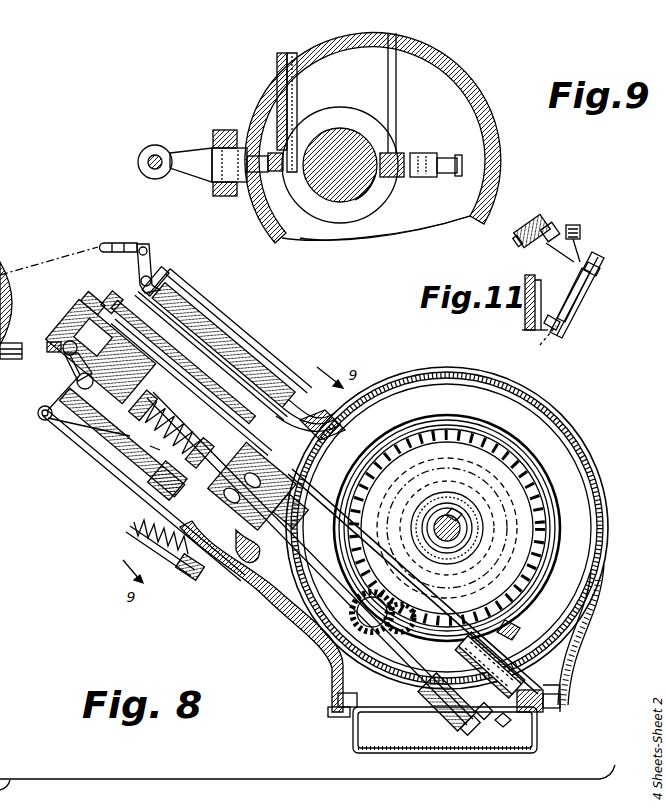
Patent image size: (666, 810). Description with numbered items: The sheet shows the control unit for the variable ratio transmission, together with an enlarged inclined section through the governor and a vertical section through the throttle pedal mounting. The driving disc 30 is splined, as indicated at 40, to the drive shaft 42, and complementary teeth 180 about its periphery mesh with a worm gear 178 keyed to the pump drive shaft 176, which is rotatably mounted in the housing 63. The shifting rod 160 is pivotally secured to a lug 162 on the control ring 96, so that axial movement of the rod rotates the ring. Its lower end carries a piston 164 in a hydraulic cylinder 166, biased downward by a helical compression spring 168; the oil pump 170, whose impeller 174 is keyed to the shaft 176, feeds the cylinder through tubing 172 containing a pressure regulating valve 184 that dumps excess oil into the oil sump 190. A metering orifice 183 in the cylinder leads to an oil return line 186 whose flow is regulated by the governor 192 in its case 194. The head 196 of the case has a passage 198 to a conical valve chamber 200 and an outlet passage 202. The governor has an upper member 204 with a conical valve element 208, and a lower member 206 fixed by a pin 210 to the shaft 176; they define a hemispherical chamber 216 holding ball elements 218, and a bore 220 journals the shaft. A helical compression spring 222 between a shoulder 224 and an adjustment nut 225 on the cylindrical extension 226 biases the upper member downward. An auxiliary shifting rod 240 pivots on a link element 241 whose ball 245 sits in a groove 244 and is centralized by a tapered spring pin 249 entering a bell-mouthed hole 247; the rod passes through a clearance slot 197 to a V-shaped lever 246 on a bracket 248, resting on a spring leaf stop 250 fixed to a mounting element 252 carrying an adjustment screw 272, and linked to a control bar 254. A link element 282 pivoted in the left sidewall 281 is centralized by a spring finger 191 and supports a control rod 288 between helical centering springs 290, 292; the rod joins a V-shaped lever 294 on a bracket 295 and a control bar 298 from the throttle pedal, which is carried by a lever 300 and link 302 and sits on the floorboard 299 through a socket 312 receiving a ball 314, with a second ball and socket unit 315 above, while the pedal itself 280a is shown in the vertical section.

In FIG. 8, the driving disc 30 is at (531, 507).
In FIG. 8, the spline 40 is at (470, 525).
In FIG. 8, the drive shaft 42 is at (455, 506).
In FIG. 8, the housing 63 is at (560, 414).
In FIG. 8, the control ring 96 is at (560, 541).
In FIG. 9, the shifting rod 160 is at (460, 163).
In FIG. 8, the shifting rod 160 is at (370, 505).
In FIG. 8, the lug 162 is at (423, 583).
In FIG. 8, the piston 164 is at (515, 680).
In FIG. 8, the hydraulic cylinder 166 is at (502, 658).
In FIG. 8, the helical compression spring 168 is at (520, 625).
In FIG. 8, the oil pump 170 is at (443, 745).
In FIG. 8, the tubing 172 is at (488, 718).
In FIG. 8, the impeller 174 is at (440, 720).
In FIG. 8, the pump drive shaft 176 is at (420, 667).
In FIG. 8, the worm gear 178 is at (365, 630).
In FIG. 8, the teeth 180 is at (460, 440).
In FIG. 8, the metering orifice 183 is at (548, 690).
In FIG. 8, the pressure regulating valve 184 is at (510, 721).
In FIG. 8, the oil return line 186 is at (576, 620).
In FIG. 8, the oil sump 190 is at (376, 745).
In FIG. 9, the spring finger 191 is at (300, 87).
In FIG. 8, the governor 192 is at (338, 384).
In FIG. 9, the case 194 is at (262, 96).
In FIG. 8, the case 194 is at (247, 352).
In FIG. 8, the head 196 is at (224, 331).
In FIG. 8, the clearance slot 197 is at (232, 308).
In FIG. 8, the passage 198 is at (198, 302).
In FIG. 8, the conical valve chamber 200 is at (144, 495).
In FIG. 8, the outlet passage 202 is at (130, 432).
In FIG. 8, the upper member 204 is at (140, 485).
In FIG. 8, the lower member 206 is at (255, 545).
In FIG. 8, the conical valve element 208 is at (120, 465).
In FIG. 8, the pin 210 is at (292, 510).
In FIG. 8, the hemispherical chamber 216 is at (262, 503).
In FIG. 8, the ball elements 218 is at (262, 485).
In FIG. 8, the bore 220 is at (250, 470).
In FIG. 8, the helical compression spring 222 is at (115, 475).
In FIG. 8, the shoulder 224 is at (292, 403).
In FIG. 8, the adjustment nut 225 is at (132, 448).
In FIG. 8, the cylindrical extension 226 is at (226, 350).
In FIG. 8, the auxiliary shifting rod 240 is at (218, 416).
In FIG. 9, the link element 241 is at (413, 178).
In FIG. 8, the link element 241 is at (362, 406).
In FIG. 9, the groove 244 is at (345, 212).
In FIG. 8, the groove 244 is at (330, 430).
In FIG. 9, the ball 245 is at (380, 197).
In FIG. 8, the V-shaped lever 246 is at (148, 262).
In FIG. 9, the bell-mouthed hole 247 is at (398, 152).
In FIG. 8, the bracket 248 is at (160, 285).
In FIG. 9, the tapered spring pin 249 is at (398, 92).
In FIG. 8, the spring leaf stop 250 is at (120, 305).
In FIG. 8, the mounting element 252 is at (92, 330).
In FIG. 8, the control bar 254 is at (112, 245).
In FIG. 8, the adjustment screw 272 is at (93, 305).
In FIG. 11, the bar 280a is at (578, 296).
In FIG. 9, the left sidewall 281 is at (285, 54).
In FIG. 8, the left sidewall 281 is at (168, 480).
In FIG. 9, the link element 282 is at (198, 157).
In FIG. 8, the link element 282 is at (138, 524).
In FIG. 9, the control rod 288 is at (160, 170).
In FIG. 8, the control rod 288 is at (150, 446).
In FIG. 8, the helical centering spring 290 is at (95, 528).
In FIG. 8, the helical centering spring 292 is at (178, 567).
In FIG. 8, the V-shaped lever 294 is at (66, 398).
In FIG. 8, the bracket 295 is at (40, 417).
In FIG. 11, the control bar 298 is at (585, 230).
In FIG. 8, the control bar 298 is at (52, 352).
In FIG. 11, the floorboard 299 is at (530, 318).
In FIG. 11, the lever 300 is at (555, 245).
In FIG. 11, the link 302 is at (560, 228).
In FIG. 11, the socket 312 is at (553, 338).
In FIG. 11, the ball 314 is at (565, 318).
In FIG. 11, the ball and socket unit 315 is at (598, 262).